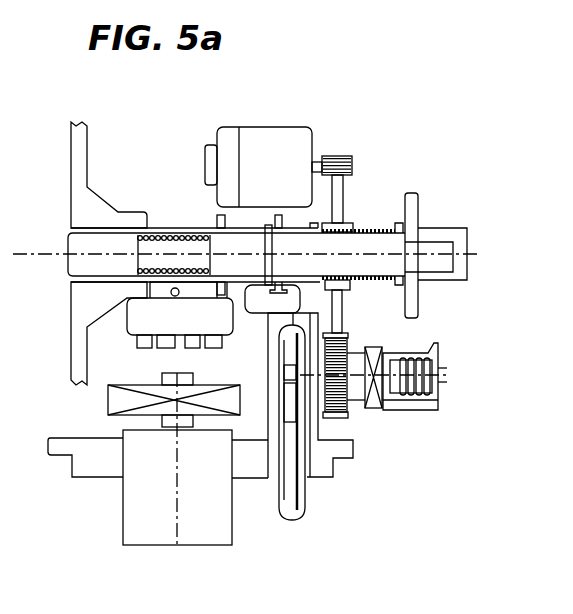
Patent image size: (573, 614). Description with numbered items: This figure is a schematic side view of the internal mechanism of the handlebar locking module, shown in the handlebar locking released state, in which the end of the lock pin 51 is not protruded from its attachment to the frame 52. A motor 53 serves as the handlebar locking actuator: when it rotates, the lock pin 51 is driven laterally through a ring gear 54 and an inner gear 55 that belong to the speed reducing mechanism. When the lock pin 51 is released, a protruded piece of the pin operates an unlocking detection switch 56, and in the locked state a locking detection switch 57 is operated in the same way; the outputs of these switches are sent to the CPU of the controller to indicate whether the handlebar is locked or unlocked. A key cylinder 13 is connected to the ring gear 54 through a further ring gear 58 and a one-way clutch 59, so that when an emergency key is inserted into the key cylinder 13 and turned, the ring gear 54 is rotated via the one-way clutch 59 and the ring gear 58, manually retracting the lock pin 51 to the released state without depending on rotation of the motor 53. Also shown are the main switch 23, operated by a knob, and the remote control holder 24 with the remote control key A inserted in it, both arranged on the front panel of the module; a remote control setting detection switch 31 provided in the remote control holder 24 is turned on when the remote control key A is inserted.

The key cylinder 13 is at (437, 410).
The main switch 23 is at (150, 546).
The remote control holder 24 is at (315, 431).
The remote control setting detection switch 31 is at (292, 300).
The lock pin 51 is at (78, 250).
The frame 52 is at (88, 188).
The motor 53 is at (258, 132).
The ring gear 54 is at (335, 200).
The inner gear 55 is at (364, 272).
The unlocking detection switch 56 is at (233, 335).
The locking detection switch 57 is at (127, 335).
The ring gear 58 is at (347, 410).
The one-way clutch 59 is at (375, 408).
The remote control key A is at (298, 495).